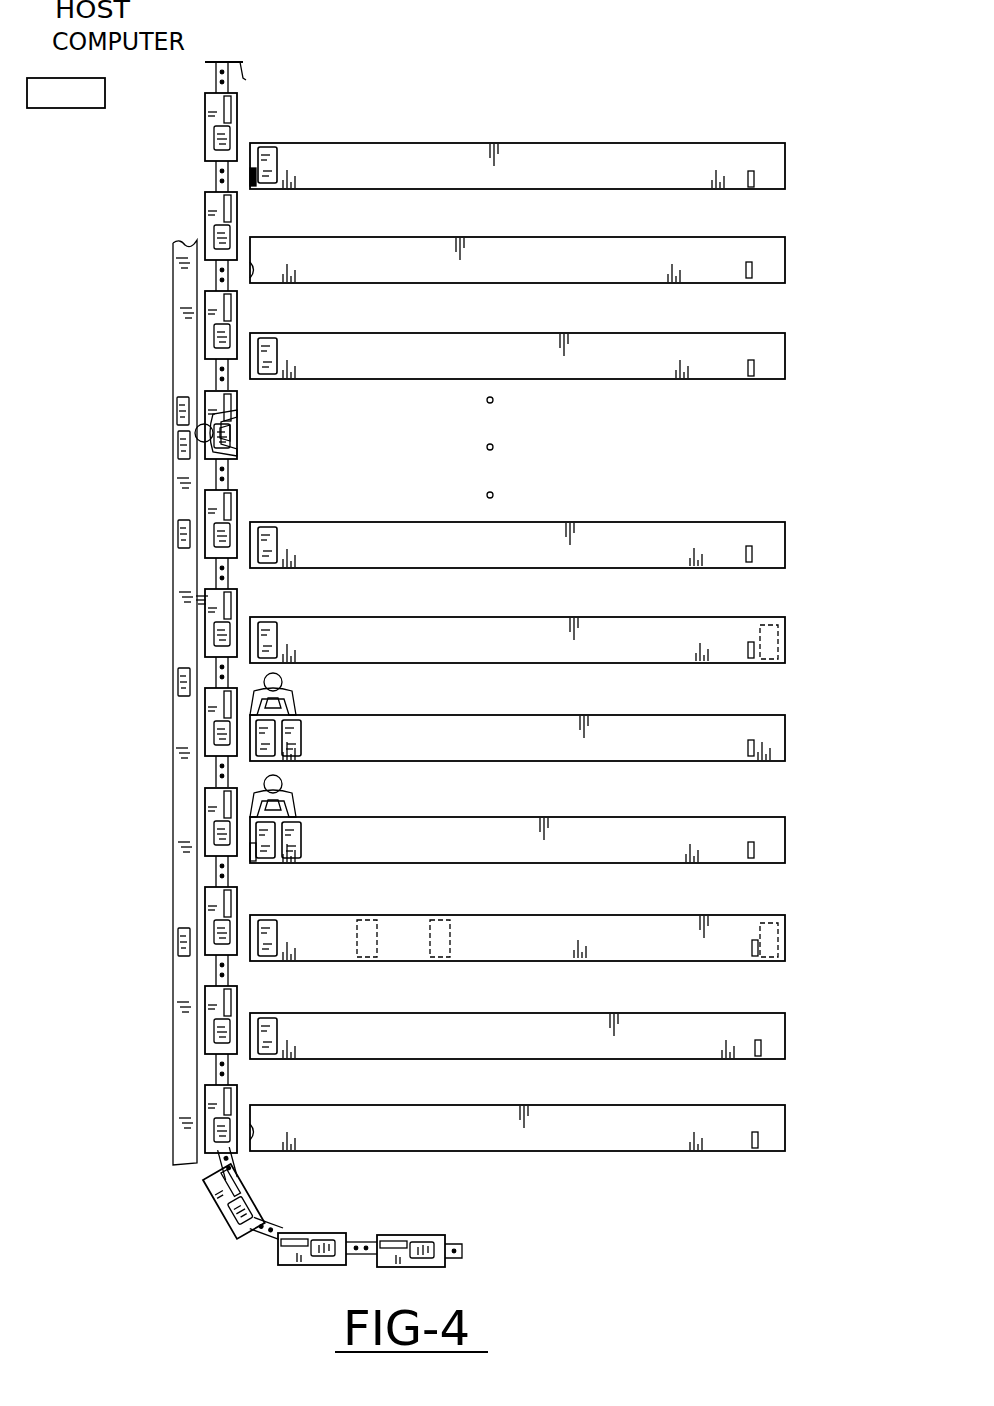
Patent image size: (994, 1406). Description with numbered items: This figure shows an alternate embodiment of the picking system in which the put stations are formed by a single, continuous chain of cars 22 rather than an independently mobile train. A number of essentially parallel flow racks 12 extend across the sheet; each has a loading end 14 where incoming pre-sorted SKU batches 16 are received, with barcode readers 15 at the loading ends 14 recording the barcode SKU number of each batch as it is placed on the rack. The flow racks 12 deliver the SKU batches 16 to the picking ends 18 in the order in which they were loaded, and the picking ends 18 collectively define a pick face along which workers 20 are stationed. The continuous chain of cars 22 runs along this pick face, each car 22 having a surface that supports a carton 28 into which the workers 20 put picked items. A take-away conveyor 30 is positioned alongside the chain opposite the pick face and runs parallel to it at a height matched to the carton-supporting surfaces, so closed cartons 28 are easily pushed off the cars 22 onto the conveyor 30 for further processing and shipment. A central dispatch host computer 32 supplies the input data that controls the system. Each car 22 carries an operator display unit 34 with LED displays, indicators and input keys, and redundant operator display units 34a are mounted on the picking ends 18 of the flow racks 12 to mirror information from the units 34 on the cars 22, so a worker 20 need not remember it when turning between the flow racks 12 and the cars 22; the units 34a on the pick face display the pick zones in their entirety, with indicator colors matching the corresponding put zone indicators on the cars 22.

The flow racks 12 is at (652, 1062).
The loading ends 14 is at (790, 1040).
The barcode readers 15 is at (755, 952).
The SKU batches 16 is at (270, 620).
The picking ends 18 is at (262, 1012).
The workers 20 is at (300, 800).
The cars 22 is at (205, 145).
The cartons 28 is at (178, 418).
The take-away conveyor 30 is at (178, 1050).
The host computer 32 is at (105, 93).
The operator display unit 34 is at (200, 598).
The operator display unit 34a is at (252, 186).